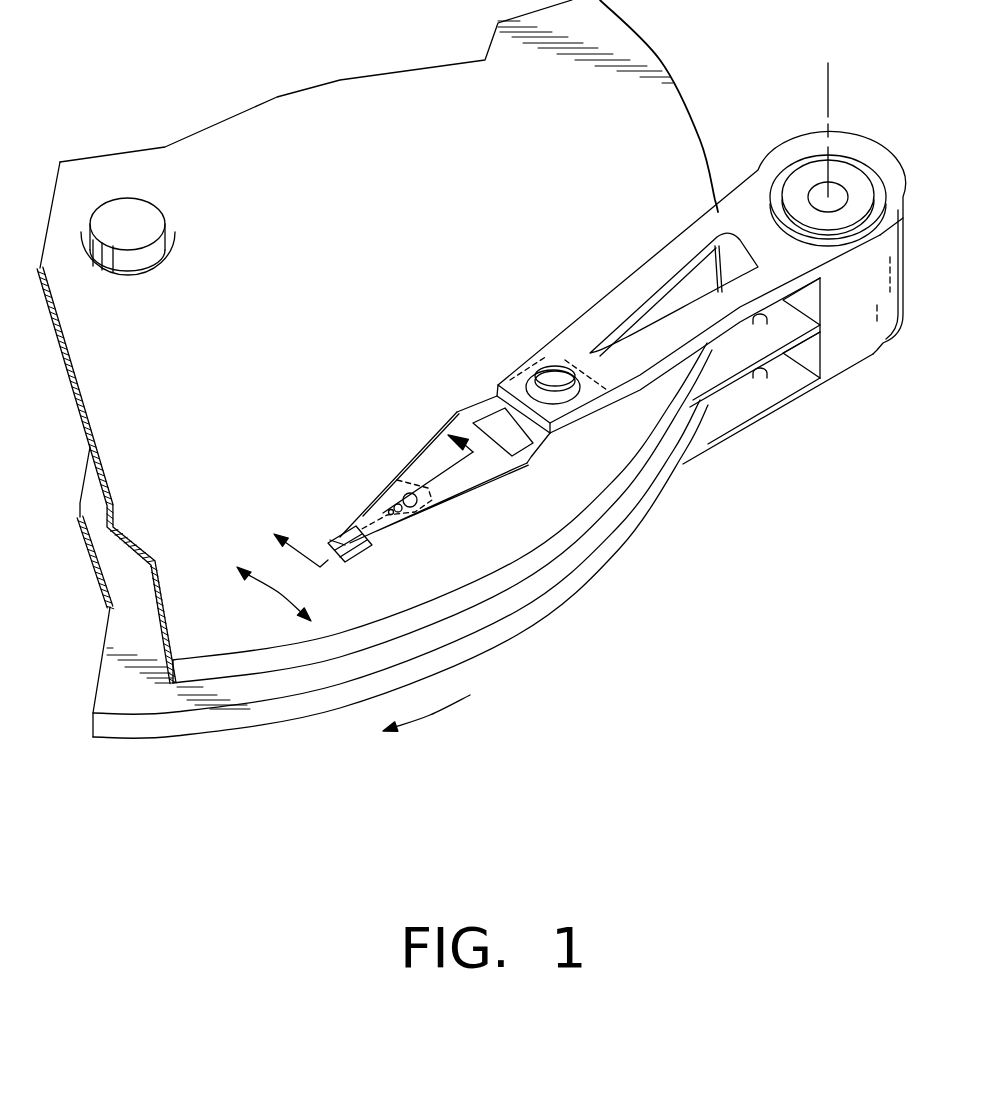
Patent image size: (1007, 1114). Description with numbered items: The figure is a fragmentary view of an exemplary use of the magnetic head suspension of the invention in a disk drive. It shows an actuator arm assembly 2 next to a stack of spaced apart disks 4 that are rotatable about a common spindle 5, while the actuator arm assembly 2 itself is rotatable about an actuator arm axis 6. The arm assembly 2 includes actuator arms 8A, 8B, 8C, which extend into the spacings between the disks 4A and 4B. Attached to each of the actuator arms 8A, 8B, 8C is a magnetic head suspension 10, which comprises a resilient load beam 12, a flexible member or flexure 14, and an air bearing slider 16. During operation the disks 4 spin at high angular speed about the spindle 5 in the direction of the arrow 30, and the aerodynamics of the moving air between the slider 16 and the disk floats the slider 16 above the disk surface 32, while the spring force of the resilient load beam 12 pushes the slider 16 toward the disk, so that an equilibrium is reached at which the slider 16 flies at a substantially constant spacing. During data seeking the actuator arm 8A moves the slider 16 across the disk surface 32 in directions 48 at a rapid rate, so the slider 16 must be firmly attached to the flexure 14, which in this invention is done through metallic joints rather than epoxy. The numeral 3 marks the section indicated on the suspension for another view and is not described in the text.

The actuator arm assembly 2 is at (701, 279).
The section line 3- 3 is at (359, 475).
The disks 4 is at (148, 762).
The disk 4A is at (284, 323).
The disk 4B is at (310, 722).
The spindle 5 is at (153, 200).
The actuator arm axis 6 is at (830, 117).
The actuator arm 8A is at (620, 287).
The actuator arm 8B is at (730, 385).
The actuator arm 8C is at (790, 410).
The magnetic head suspension 10 is at (413, 438).
The resilient load beam 12 is at (427, 477).
The flexure 14 is at (397, 481).
The air bearing slider 16 is at (322, 547).
The arrow 30 is at (440, 713).
The disk surface 32 is at (473, 547).
The directions 48 is at (270, 596).